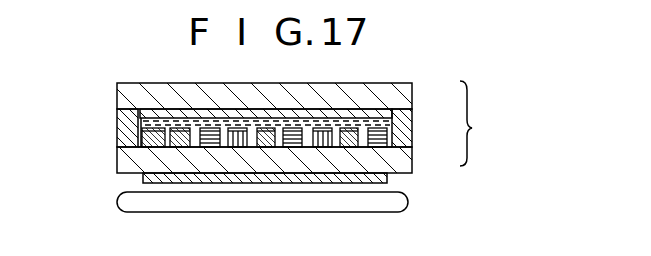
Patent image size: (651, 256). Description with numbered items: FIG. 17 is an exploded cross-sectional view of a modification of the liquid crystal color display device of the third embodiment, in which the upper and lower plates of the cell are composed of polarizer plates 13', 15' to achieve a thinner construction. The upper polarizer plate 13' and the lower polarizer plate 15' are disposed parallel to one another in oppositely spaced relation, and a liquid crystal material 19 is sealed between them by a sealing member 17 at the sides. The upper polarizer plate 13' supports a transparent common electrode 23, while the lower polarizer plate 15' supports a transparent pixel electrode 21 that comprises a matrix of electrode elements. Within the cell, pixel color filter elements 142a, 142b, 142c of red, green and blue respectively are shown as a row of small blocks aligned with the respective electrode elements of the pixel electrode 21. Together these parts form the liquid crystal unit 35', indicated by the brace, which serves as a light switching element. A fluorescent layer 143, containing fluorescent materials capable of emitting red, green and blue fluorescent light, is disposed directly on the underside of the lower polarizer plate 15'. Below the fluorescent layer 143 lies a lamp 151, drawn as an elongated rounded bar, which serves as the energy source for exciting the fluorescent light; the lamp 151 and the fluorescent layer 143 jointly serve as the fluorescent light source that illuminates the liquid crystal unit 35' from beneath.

The upper polarizer plate 13' is at (289, 97).
The transparent common electrode 23 is at (157, 109).
The sealing member 17 is at (118, 112).
The liquid crystal material 19 is at (392, 128).
The pixel color filter element 142a is at (140, 130).
The pixel color filter element 142b is at (182, 128).
The pixel color filter element 142c is at (210, 130).
The lower polarizer plate 15' is at (289, 159).
The transparent pixel electrode 21 is at (150, 148).
The fluorescent layer 143 is at (387, 180).
The lamp 151 is at (406, 204).
The liquid crystal unit 35' is at (484, 123).